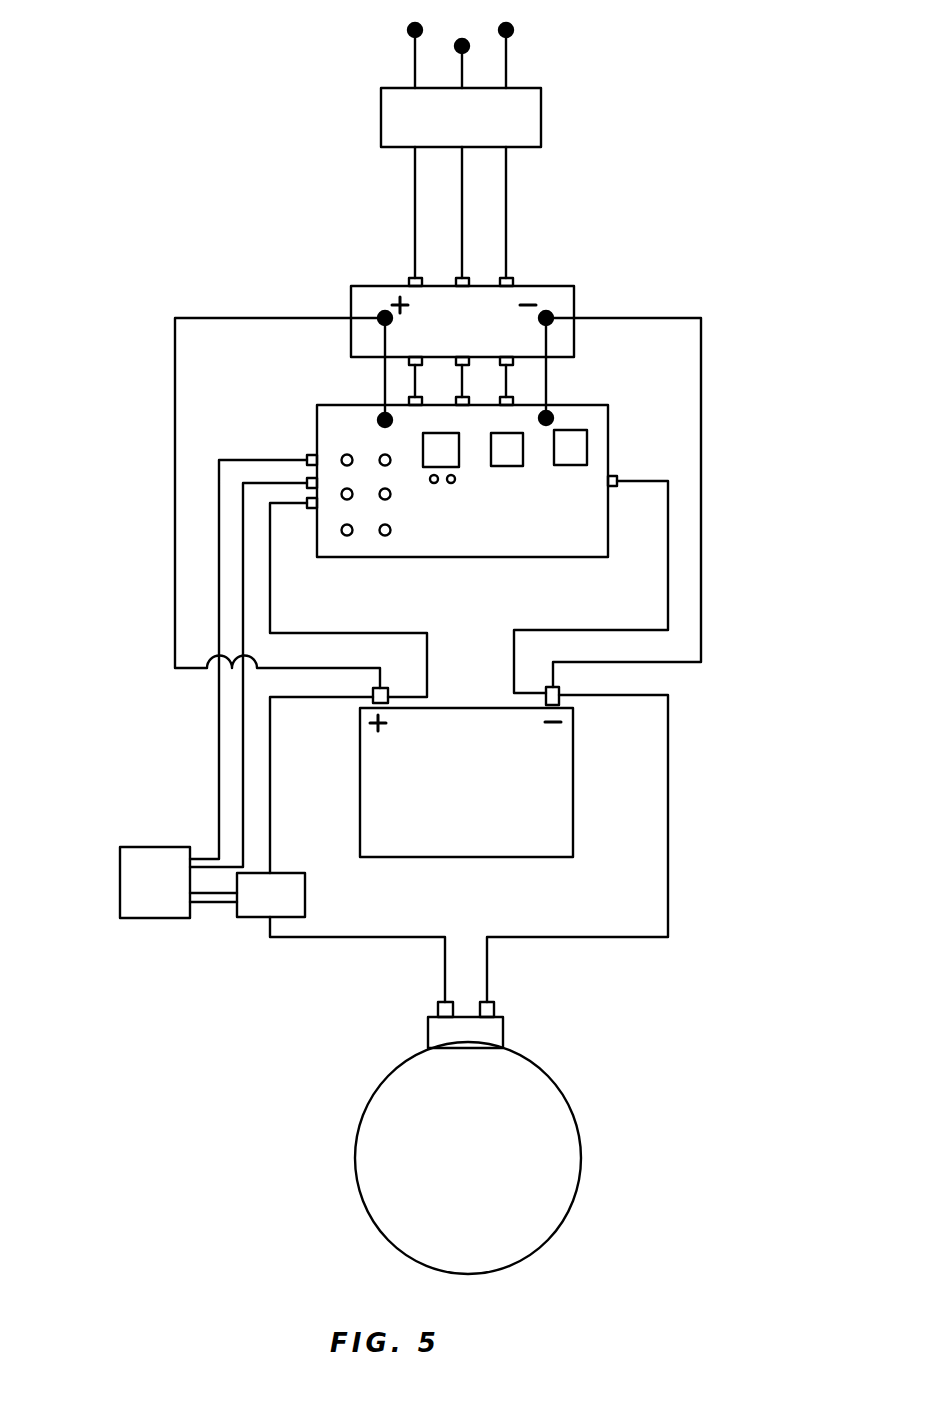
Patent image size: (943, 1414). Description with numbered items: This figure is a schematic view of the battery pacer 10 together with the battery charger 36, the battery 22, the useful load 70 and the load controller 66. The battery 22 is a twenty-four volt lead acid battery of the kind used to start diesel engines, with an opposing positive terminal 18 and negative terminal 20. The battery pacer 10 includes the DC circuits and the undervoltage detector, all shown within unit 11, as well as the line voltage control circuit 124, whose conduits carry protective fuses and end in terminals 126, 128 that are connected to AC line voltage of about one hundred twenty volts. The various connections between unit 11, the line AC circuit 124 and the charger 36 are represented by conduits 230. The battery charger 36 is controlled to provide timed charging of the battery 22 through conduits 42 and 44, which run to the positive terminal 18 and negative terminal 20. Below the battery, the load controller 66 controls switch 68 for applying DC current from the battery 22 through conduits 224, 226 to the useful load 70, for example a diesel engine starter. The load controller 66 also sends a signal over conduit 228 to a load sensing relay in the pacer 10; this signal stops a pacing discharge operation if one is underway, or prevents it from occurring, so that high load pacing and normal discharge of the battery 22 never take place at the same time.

The battery pacer 10 is at (724, 131).
The unit 11 is at (500, 527).
The positive terminal 18 is at (372, 705).
The negative terminal 20 is at (560, 697).
The battery 22 is at (480, 801).
The battery charger 36 is at (470, 336).
The conduit 42 is at (175, 400).
The conduit 44 is at (701, 400).
The load controller 66 is at (135, 882).
The switch 68 is at (258, 905).
The useful load 70 is at (480, 1173).
The line voltage control circuit 124 is at (468, 137).
The terminal 126 is at (408, 28).
The terminal 128 is at (512, 28).
The conduit 224 is at (272, 835).
The conduit 226 is at (668, 810).
The conduit 228 is at (245, 768).
The conduits 230 is at (506, 210).